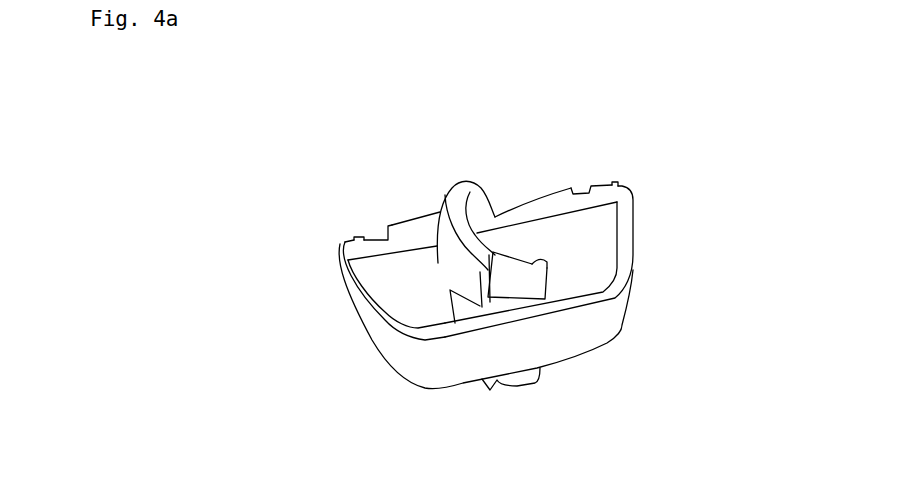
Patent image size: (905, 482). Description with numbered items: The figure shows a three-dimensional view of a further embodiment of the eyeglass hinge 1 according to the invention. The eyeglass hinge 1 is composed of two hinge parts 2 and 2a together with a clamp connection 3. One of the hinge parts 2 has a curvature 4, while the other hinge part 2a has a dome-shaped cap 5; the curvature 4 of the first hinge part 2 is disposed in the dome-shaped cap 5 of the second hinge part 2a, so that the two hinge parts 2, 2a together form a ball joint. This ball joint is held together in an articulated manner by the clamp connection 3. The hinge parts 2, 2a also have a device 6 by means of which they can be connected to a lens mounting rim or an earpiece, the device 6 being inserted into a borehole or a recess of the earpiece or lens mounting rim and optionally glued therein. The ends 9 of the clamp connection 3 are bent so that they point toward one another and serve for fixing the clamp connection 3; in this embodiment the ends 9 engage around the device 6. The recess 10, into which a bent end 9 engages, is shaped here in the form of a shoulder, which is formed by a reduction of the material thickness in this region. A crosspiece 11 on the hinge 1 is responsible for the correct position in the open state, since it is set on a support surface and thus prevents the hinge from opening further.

The eyeglass hinge 1 is at (226, 461).
The hinge part 2 is at (565, 241).
The hinge part 2a is at (385, 283).
The clamp connection 3 is at (540, 335).
The curvature 4 is at (518, 277).
The dome-shaped cap 5 is at (462, 190).
The device 6 is at (412, 232).
The ends 9 is at (360, 237).
The recess 10 is at (387, 233).
The crosspiece 11 is at (545, 268).